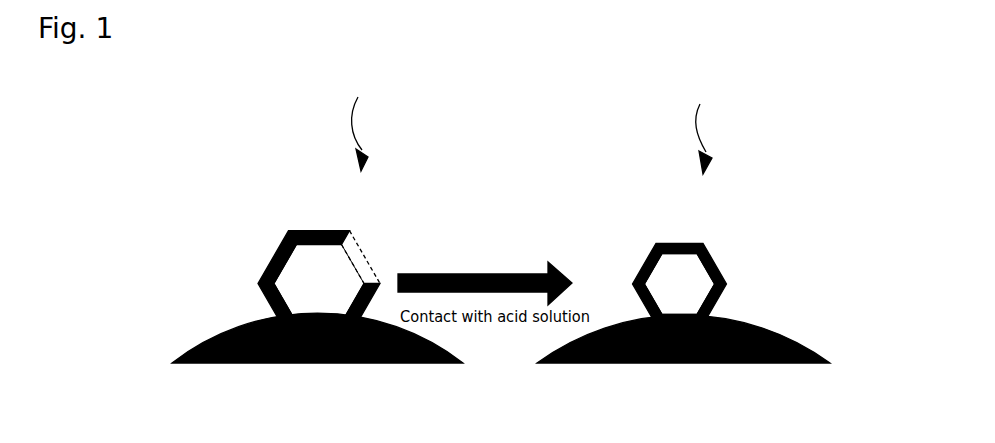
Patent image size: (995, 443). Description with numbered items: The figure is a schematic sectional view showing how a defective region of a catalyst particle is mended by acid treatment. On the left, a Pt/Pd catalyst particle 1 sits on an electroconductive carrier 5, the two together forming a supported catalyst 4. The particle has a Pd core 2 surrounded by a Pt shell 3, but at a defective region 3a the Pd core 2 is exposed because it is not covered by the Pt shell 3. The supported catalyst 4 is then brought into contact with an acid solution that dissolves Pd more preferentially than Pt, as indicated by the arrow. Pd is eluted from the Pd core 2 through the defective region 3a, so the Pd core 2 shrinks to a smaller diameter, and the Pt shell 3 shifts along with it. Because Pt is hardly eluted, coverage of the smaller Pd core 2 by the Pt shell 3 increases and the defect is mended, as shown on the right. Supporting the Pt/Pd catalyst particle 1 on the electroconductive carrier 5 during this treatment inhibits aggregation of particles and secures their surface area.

The Pt/Pd catalyst particle 1 is at (322, 239).
The Pd core 2 is at (295, 290).
The Pt shell 3 is at (288, 232).
The defective region 3a is at (360, 258).
The supported catalyst 4 is at (365, 94).
The electroconductive carrier 5 is at (202, 335).